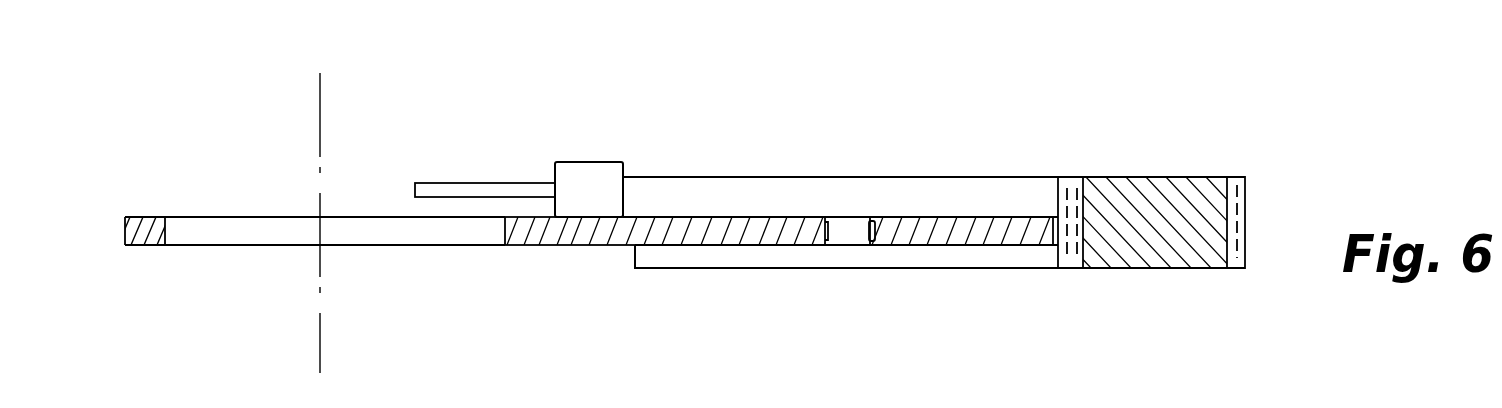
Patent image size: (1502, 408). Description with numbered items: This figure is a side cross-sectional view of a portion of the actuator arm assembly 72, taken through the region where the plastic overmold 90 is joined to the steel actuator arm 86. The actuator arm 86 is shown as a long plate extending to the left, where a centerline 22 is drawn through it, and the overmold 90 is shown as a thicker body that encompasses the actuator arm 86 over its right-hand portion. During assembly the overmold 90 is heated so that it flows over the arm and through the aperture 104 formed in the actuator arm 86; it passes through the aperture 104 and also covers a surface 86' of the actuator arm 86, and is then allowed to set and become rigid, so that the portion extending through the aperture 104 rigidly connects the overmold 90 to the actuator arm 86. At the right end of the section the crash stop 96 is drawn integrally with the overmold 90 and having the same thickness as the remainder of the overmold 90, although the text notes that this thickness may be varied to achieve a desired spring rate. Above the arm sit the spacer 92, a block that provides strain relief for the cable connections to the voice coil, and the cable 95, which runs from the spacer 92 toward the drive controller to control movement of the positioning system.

The axis / centerline 22 is at (320, 90).
The cable 95 is at (460, 190).
The spacer 92 is at (600, 162).
The overmold 90 is at (680, 195).
The actuator arm assembly 72 is at (708, 274).
The actuator arm 86 is at (666, 265).
The surface of actuator arm 86' is at (780, 280).
The aperture 104 is at (875, 235).
The crash stop 96 is at (1145, 268).